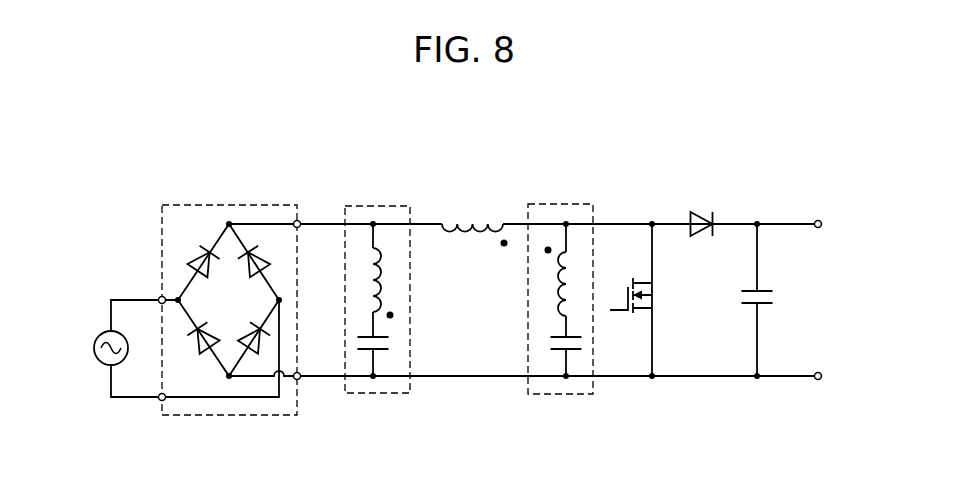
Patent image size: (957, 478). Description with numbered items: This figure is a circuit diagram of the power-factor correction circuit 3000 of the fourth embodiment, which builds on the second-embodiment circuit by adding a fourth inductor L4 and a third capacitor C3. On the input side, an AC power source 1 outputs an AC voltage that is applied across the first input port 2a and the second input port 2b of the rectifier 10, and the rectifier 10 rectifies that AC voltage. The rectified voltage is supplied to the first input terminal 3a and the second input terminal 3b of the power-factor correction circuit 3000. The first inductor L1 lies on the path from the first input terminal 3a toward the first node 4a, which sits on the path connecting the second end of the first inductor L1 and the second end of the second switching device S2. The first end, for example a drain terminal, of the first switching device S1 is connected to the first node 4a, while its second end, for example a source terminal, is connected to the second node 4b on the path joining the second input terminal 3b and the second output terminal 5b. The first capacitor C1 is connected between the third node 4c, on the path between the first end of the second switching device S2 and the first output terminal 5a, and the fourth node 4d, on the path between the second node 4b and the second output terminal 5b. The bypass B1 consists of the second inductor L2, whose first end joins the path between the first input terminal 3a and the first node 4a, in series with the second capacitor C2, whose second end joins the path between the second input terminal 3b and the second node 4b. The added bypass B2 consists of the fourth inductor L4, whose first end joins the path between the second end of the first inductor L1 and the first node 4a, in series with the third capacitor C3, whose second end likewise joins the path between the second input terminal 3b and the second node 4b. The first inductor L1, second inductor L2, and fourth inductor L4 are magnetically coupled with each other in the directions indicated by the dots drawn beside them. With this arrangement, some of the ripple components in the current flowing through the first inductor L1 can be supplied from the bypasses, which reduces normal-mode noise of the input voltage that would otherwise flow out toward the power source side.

The power-factor correction circuit 3000 is at (477, 120).
The AC power source 1 is at (99, 336).
The first input port 2a is at (159, 297).
The second input port 2b is at (159, 400).
The rectifier 10 is at (232, 205).
The first input terminal 3a is at (302, 218).
The second input terminal 3b is at (302, 382).
The bypass B1 is at (398, 276).
The second inductor L2 is at (390, 282).
The second capacitor C2 is at (390, 343).
The first inductor L1 is at (475, 218).
The bypass B2 is at (540, 277).
The fourth inductor L4 is at (544, 282).
The third capacitor C3 is at (544, 343).
The first node 4a is at (652, 221).
The second node 4b is at (653, 380).
The first switching device S1 is at (646, 300).
The second switching device S2 is at (704, 207).
The first capacitor C1 is at (775, 300).
The third node 4c is at (758, 220).
The fourth node 4d is at (758, 380).
The first output terminal 5a is at (837, 224).
The second output terminal 5b is at (837, 375).